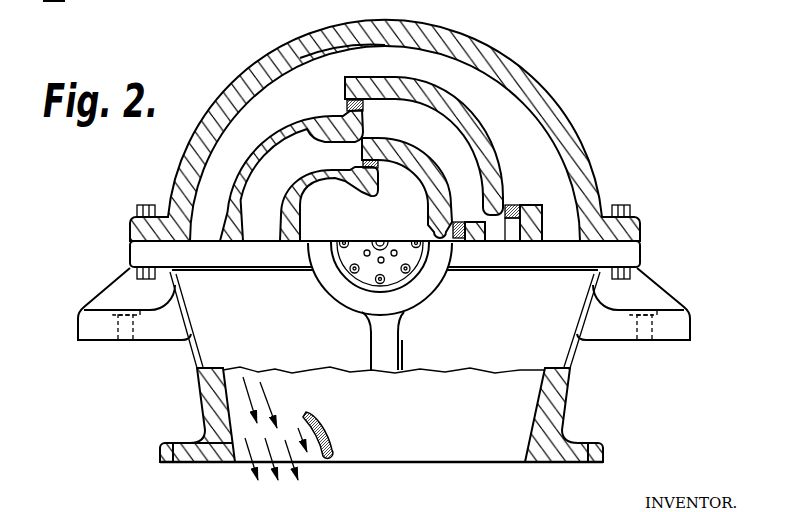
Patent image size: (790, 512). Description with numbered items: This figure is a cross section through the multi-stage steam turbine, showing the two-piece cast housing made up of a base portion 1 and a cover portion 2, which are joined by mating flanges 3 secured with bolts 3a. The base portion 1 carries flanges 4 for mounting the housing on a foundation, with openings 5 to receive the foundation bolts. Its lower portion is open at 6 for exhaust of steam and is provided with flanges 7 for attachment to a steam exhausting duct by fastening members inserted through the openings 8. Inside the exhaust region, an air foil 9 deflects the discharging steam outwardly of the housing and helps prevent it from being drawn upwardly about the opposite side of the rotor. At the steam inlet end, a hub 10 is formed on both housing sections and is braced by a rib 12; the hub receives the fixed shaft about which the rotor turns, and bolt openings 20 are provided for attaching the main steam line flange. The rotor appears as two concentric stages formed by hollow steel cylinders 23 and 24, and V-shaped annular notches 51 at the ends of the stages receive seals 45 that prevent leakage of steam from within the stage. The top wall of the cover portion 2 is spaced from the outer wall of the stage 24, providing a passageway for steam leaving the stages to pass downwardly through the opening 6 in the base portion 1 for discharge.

The base portion 1 is at (192, 360).
The cover portion 2 is at (531, 83).
The mating flanges 3 is at (130, 255).
The bolts 3a is at (146, 204).
The flanges 4 is at (78, 327).
The openings 5 is at (118, 340).
The exhaust opening 6 is at (370, 450).
The flanges 7 is at (162, 464).
The openings 8 is at (183, 448).
The air foil 9 is at (335, 430).
The hub 10 is at (434, 293).
The rib 12 is at (399, 350).
The bolt openings 20 is at (386, 263).
The hollow steel cylinder 23 is at (393, 146).
The hollow steel cylinder 24 is at (411, 82).
The seals 45 is at (348, 105).
The V-shaped annular notches 51 is at (345, 51).